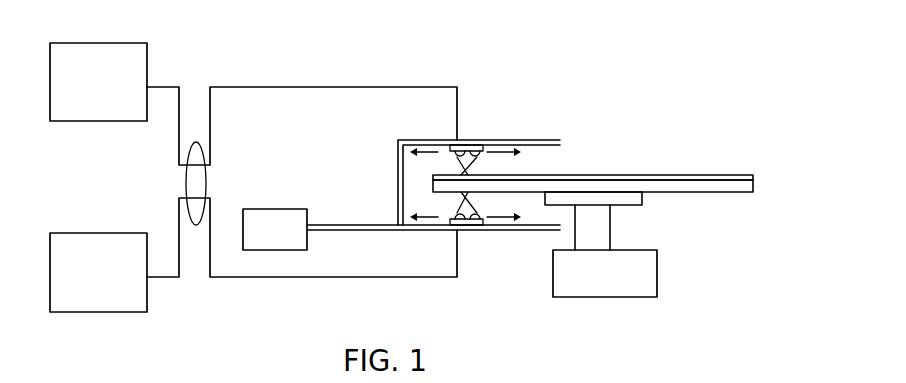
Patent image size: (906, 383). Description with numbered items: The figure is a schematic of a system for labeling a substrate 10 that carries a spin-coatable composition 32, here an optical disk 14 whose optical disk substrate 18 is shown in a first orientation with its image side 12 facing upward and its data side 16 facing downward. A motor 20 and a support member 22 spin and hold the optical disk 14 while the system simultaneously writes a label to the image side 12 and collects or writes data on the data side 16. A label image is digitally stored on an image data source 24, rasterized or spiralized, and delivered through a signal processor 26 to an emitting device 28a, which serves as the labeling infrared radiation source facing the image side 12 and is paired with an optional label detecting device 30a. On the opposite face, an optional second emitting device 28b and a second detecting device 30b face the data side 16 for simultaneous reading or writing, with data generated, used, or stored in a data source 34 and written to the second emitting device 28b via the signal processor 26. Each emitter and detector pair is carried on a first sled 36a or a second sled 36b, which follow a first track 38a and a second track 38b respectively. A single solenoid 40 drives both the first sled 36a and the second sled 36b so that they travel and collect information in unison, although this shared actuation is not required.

The system for labeling a substrate 10 is at (687, 55).
The image side 12 is at (695, 170).
The optical disk 14 is at (628, 152).
The data side 16 is at (702, 197).
The optical disk substrate 18 is at (754, 188).
The motor 20 is at (592, 284).
The support member 22 is at (618, 199).
The image data source 24 is at (87, 91).
The signal processor 26 is at (190, 217).
The emitting device 28a is at (452, 152).
The second emitting device 28b is at (452, 210).
The label detecting device 30a is at (478, 158).
The second detecting device 30b is at (478, 222).
The spin-coatable composition 32 is at (755, 174).
The data source 34 is at (87, 280).
The first sled 36a is at (458, 146).
The second sled 36b is at (458, 228).
The first track 38a is at (547, 139).
The second track 38b is at (537, 231).
The solenoid 40 is at (262, 240).